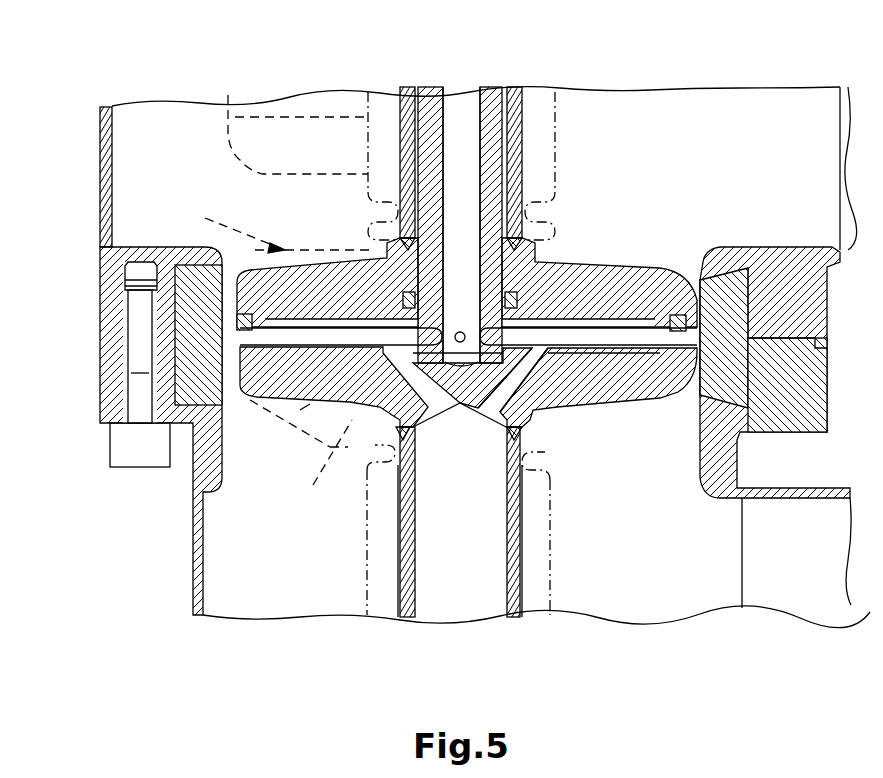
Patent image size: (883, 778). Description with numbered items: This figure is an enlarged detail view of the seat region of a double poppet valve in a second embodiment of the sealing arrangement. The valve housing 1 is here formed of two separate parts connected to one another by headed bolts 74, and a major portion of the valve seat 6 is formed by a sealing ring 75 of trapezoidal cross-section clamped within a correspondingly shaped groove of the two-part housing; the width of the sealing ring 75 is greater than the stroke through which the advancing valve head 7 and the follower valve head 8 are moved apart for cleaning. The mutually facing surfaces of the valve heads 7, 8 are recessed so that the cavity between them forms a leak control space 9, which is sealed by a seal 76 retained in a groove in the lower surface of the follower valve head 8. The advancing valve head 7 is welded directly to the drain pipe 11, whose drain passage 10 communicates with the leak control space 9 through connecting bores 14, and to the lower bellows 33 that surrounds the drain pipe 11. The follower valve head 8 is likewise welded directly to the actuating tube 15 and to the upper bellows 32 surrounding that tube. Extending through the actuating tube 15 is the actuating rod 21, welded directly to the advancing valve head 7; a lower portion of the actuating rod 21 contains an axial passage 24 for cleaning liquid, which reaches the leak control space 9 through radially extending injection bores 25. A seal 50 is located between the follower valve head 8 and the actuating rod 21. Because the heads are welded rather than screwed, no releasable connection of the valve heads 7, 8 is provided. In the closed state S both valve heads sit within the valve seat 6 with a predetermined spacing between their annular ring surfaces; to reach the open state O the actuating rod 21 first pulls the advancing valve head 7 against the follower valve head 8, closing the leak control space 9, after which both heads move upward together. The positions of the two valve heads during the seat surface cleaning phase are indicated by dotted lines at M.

The valve housing 1 is at (100, 246).
The valve seat 6 is at (697, 388).
The advancing valve head 7 is at (345, 412).
The follower valve head 8 is at (240, 266).
The leak control space 9 is at (585, 335).
The drain passage 10 is at (466, 603).
The drain pipe 11 is at (518, 585).
The connecting bores 14 is at (532, 380).
The actuating tube 15 is at (512, 92).
The actuating rod 21 is at (425, 92).
The axial passage 24 is at (462, 95).
The injection bores 25 is at (465, 335).
The upper metal bellows 32 is at (377, 92).
The lower metal bellows 33 is at (555, 537).
The seal 50 is at (516, 296).
The headed bolts 74 is at (122, 443).
The sealing ring 75 is at (190, 357).
The seal 76 is at (166, 330).
The open state O is at (225, 140).
The cleaning phase positions M is at (278, 355).
The closed state S is at (300, 410).